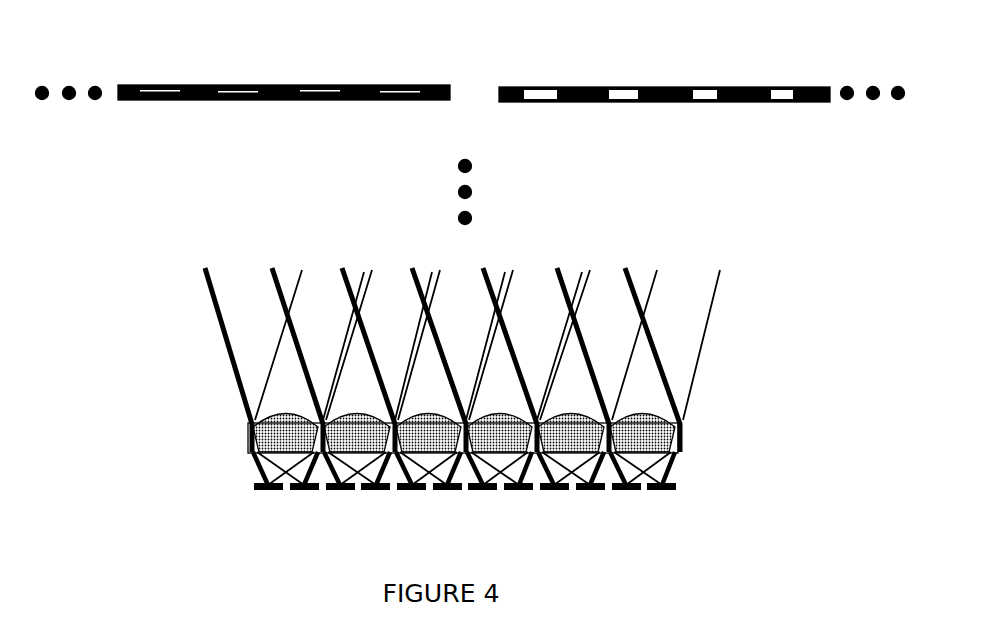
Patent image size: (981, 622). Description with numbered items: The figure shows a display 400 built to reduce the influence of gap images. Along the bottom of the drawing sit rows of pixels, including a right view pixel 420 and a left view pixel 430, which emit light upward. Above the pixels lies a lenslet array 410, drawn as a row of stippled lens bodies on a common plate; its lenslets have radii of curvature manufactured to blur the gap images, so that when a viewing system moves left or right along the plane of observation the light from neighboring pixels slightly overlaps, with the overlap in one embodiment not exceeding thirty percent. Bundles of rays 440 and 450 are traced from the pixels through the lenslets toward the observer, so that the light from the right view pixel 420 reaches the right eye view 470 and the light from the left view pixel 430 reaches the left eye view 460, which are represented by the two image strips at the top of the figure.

The display 400 is at (604, 552).
The lenslet array 410 is at (249, 427).
The right view pixel 420 is at (268, 488).
The left view pixel 430 is at (303, 488).
The left eye light rays 440 is at (224, 341).
The right eye light rays 450 is at (695, 358).
The left eye view 460 is at (243, 64).
The right eye view 470 is at (702, 66).